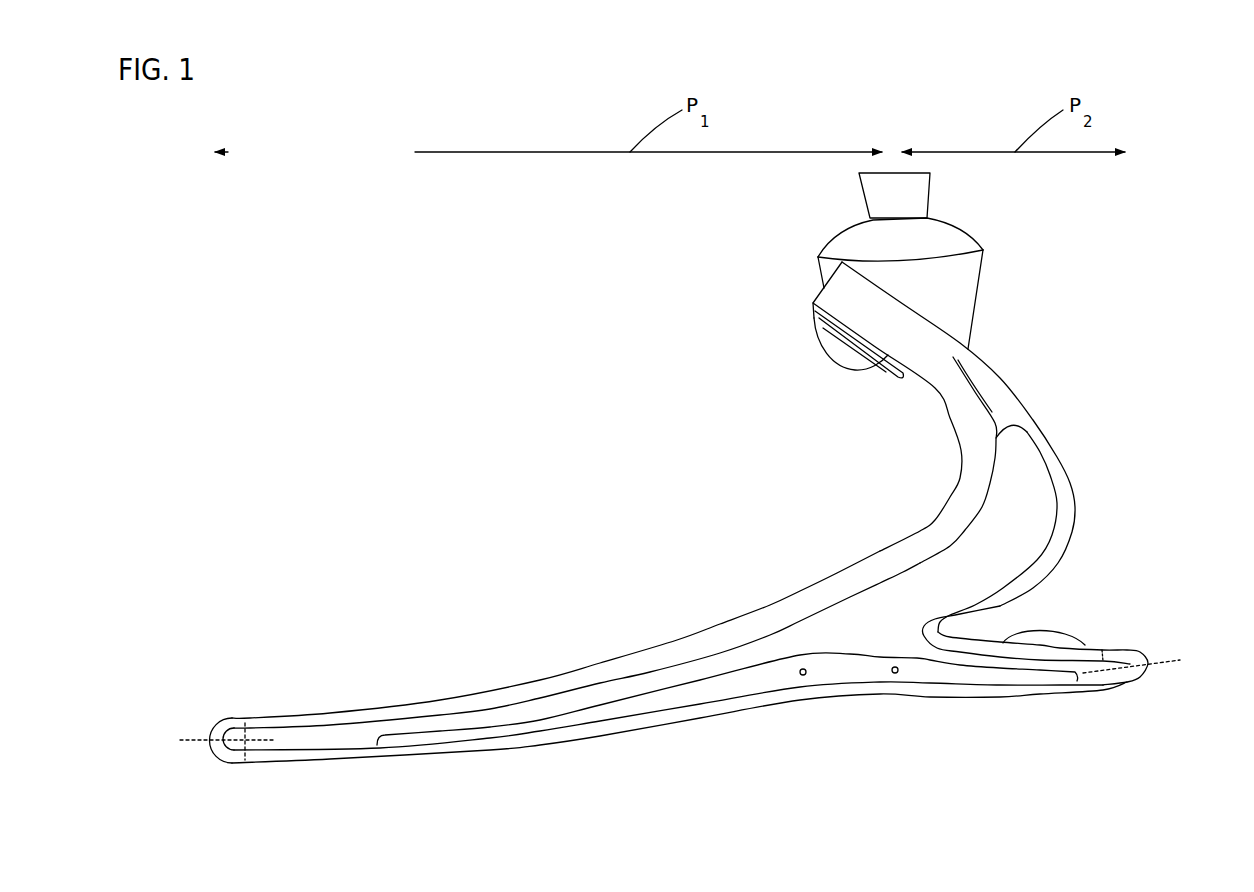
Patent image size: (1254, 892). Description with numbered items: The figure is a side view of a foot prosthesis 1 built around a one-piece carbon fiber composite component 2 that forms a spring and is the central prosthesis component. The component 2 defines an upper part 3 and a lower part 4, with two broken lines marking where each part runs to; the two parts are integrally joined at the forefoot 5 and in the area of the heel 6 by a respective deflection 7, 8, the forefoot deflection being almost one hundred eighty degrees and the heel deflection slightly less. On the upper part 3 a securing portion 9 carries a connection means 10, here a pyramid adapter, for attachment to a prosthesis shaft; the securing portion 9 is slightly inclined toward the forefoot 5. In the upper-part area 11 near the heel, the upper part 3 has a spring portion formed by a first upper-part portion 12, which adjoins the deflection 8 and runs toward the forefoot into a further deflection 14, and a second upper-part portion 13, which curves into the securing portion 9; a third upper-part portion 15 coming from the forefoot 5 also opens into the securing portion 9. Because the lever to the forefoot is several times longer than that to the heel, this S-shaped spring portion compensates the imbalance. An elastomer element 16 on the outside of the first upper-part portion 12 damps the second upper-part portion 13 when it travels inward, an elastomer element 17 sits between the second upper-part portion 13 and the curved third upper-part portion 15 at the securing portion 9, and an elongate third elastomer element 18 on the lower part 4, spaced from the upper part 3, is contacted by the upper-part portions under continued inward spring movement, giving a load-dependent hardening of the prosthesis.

The foot prosthesis 1 is at (655, 500).
The one-piece carbon fiber composite component 2 is at (772, 590).
The upper part 3 is at (400, 680).
The lower part 4 is at (550, 768).
The forefoot 5 is at (212, 700).
The heel 6 is at (1160, 643).
The deflection 7 is at (215, 766).
The deflection 8 is at (1102, 652).
The securing portion 9 is at (918, 350).
The connection means 10 is at (985, 262).
The upper-part area 11 is at (1098, 488).
The first upper-part portion 12 is at (1112, 653).
The second upper-part portion 13 is at (1070, 512).
The deflection 14 is at (916, 640).
The third upper-part portion 15 is at (842, 592).
The elastomer element 16 is at (1047, 633).
The elastomer element 17 is at (1003, 404).
The third elastomer element 18 is at (843, 668).